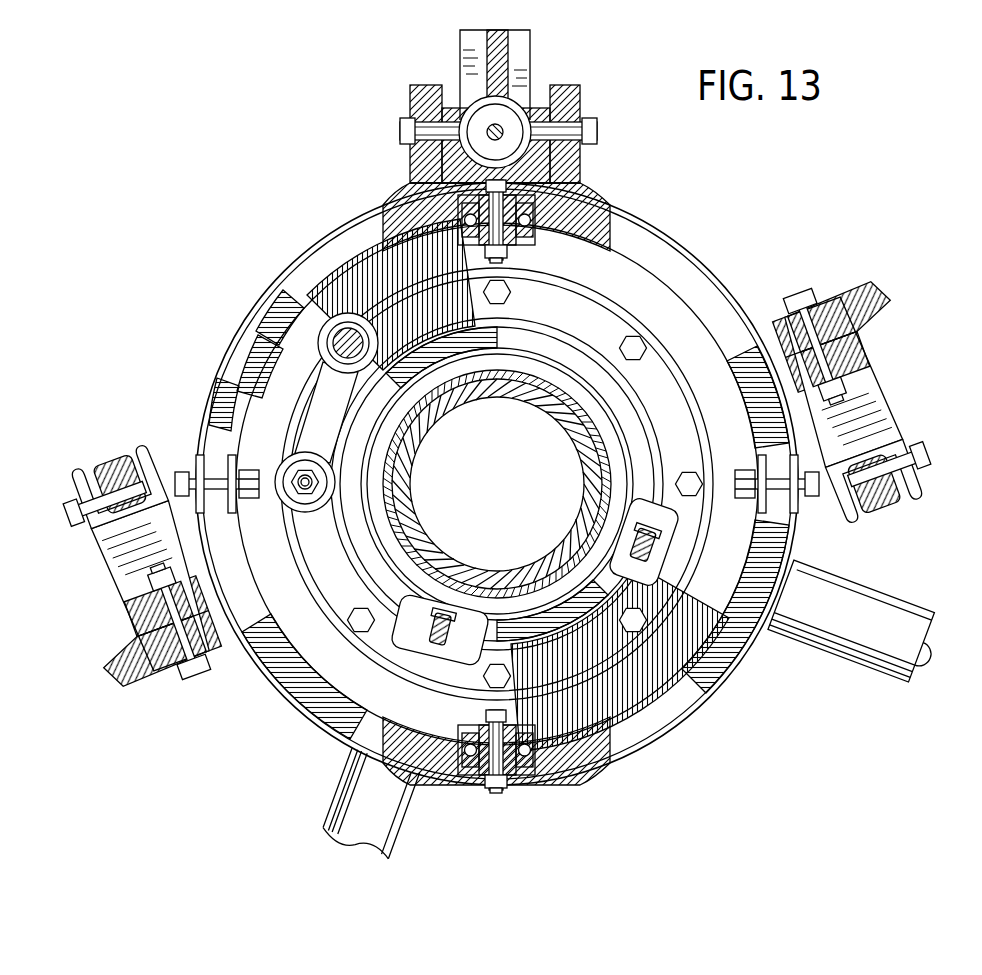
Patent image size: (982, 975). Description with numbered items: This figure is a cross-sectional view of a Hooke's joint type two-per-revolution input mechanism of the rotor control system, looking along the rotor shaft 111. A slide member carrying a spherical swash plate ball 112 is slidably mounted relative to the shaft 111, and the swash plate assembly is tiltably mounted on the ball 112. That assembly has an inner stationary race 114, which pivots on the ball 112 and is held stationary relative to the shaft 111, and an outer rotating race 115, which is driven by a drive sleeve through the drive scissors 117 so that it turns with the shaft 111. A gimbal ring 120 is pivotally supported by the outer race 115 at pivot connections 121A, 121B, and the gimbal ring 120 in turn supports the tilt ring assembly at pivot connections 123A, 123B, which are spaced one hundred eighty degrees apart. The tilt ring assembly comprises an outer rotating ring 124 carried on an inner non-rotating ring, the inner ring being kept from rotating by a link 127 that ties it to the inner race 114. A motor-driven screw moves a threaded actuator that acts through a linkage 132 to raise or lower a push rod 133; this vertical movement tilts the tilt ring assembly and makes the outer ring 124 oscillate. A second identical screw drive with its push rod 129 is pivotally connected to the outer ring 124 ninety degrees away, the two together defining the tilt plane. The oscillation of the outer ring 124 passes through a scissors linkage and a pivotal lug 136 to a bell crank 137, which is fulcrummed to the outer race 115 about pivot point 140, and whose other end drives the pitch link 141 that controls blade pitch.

The shaft 111 is at (423, 425).
The swash plate ball 112 is at (353, 512).
The inner stationary race 114 is at (564, 312).
The outer rotating race 115 is at (700, 347).
The drive scissors 117 is at (507, 52).
The gimbal ring 120 is at (682, 270).
The pivot connection 121A is at (185, 460).
The pivot connection 121B is at (812, 500).
The pivot connection 123A is at (508, 782).
The pivot connection 123B is at (502, 252).
The outer rotating ring 124 is at (525, 193).
The link 127 is at (330, 410).
The push rod 129 is at (327, 788).
The linkage 132 is at (613, 540).
The push rod 133 is at (633, 540).
The pivotal lug 136 is at (795, 298).
The bell crank 137 is at (867, 392).
The pivot point 140 is at (782, 358).
The pitch link 141 is at (880, 503).